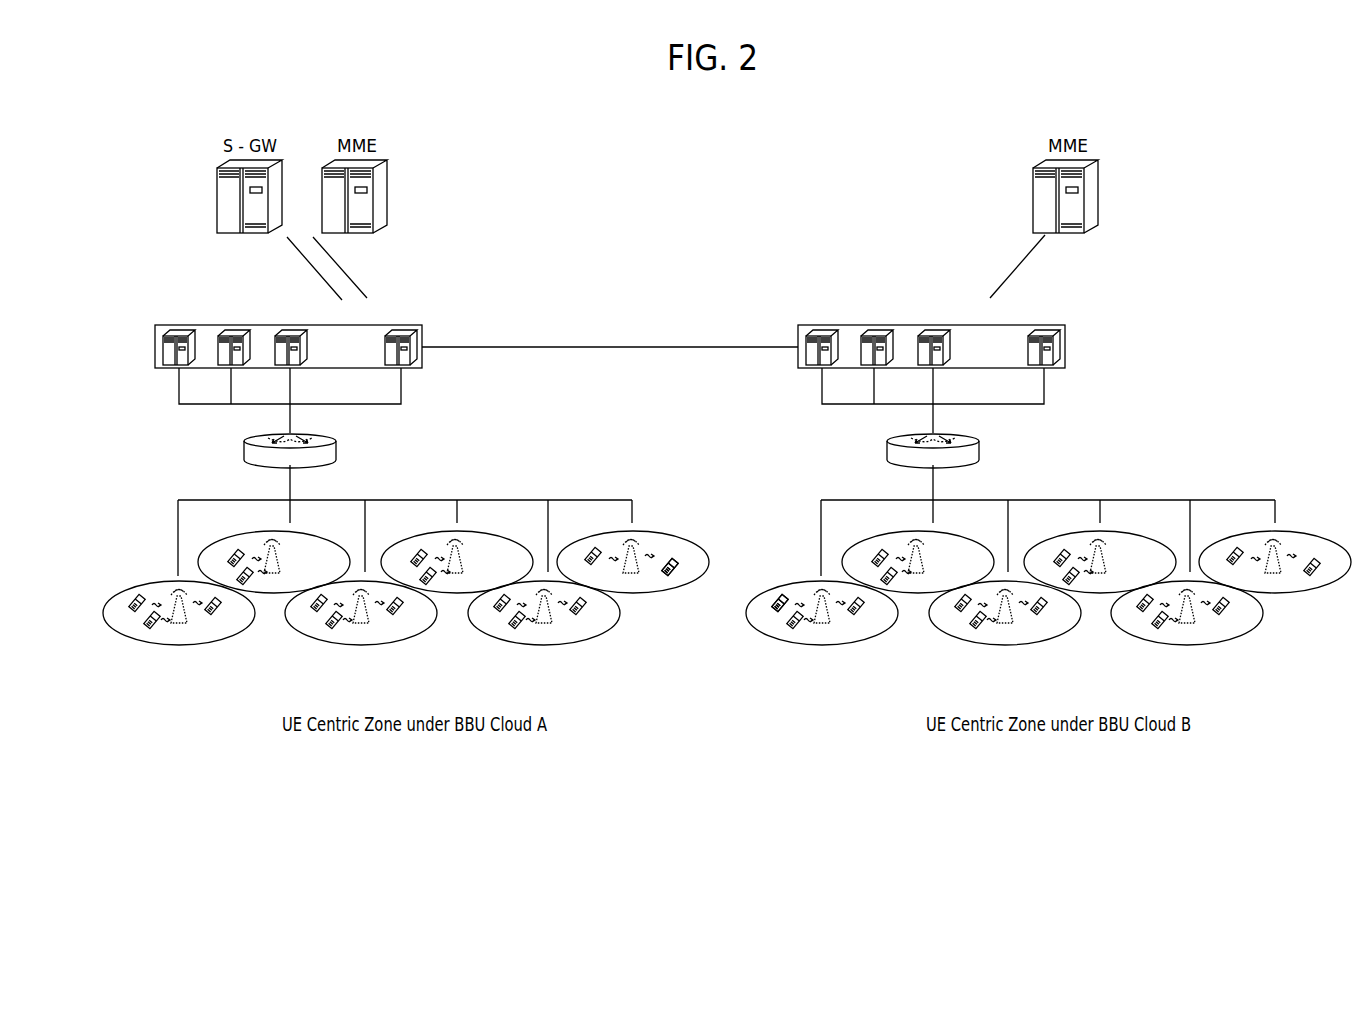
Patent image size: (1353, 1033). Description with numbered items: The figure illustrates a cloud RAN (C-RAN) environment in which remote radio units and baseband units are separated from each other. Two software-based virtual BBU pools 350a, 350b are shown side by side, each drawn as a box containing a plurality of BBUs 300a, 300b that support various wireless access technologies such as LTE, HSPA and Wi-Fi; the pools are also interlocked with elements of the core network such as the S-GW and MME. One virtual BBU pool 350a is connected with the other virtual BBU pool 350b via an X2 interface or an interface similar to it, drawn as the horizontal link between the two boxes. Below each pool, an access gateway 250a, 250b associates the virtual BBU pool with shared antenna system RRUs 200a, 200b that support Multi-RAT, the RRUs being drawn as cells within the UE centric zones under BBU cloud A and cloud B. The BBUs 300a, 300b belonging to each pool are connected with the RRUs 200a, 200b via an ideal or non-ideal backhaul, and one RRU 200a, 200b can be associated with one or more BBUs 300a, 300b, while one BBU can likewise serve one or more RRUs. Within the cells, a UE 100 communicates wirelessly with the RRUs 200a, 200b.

The UE 100 is at (778, 600).
The RRU 200a is at (178, 623).
The RRU 200b is at (820, 622).
The access gateway 250a is at (428, 463).
The access gateway 250b is at (1078, 463).
The BBU 300a is at (165, 350).
The BBU 300b is at (1060, 347).
The virtual BBU pool 350a is at (530, 318).
The virtual BBU pool 350b is at (1160, 318).